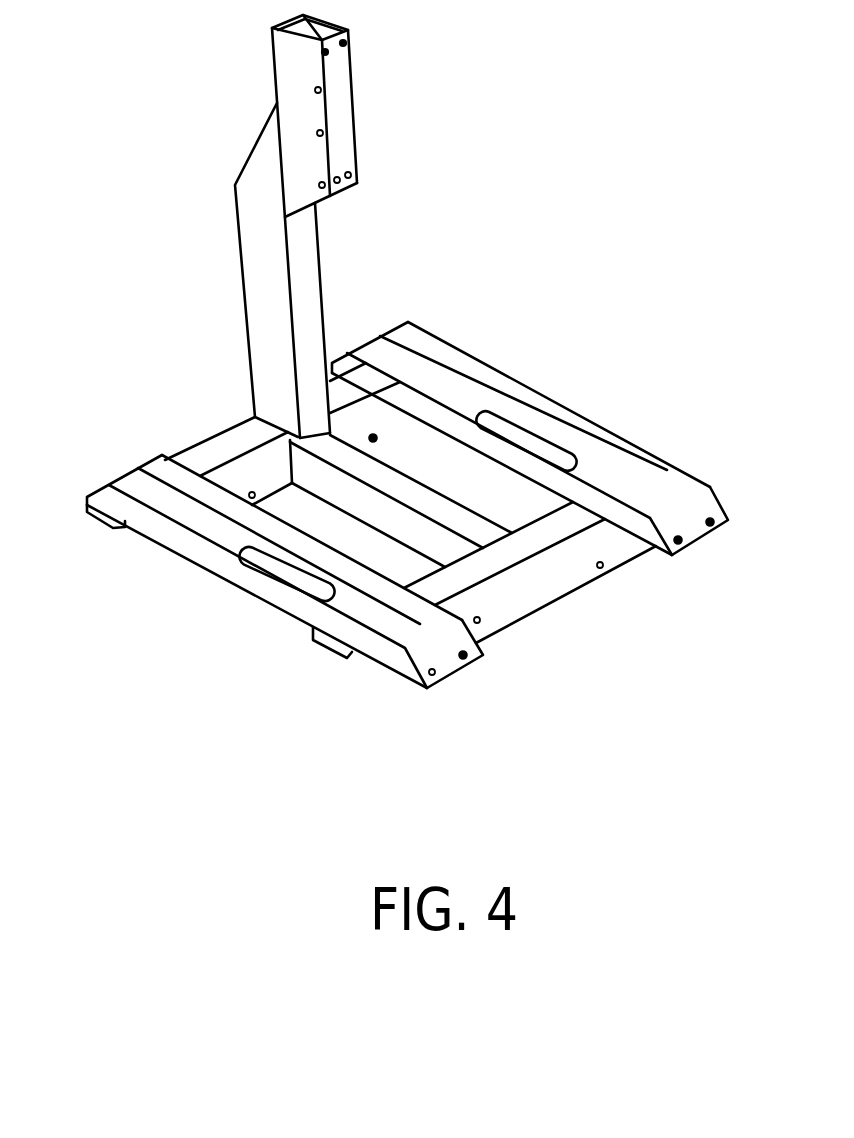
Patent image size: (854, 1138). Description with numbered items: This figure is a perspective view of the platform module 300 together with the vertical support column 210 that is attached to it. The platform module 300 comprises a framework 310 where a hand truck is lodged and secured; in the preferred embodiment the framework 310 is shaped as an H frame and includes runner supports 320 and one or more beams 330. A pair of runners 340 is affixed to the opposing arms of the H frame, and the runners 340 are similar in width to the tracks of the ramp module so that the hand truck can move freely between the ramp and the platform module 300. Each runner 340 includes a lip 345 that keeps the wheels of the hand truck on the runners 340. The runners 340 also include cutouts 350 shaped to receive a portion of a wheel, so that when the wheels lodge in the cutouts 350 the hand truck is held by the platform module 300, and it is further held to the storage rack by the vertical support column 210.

The vertical support column 210 is at (236, 212).
The platform module 300 is at (650, 300).
The framework 310 is at (208, 443).
The runner supports 320 is at (558, 597).
The beams 330 is at (407, 468).
The runners 340 is at (640, 497).
The lip 345 is at (462, 363).
The cutouts 350 is at (294, 580).